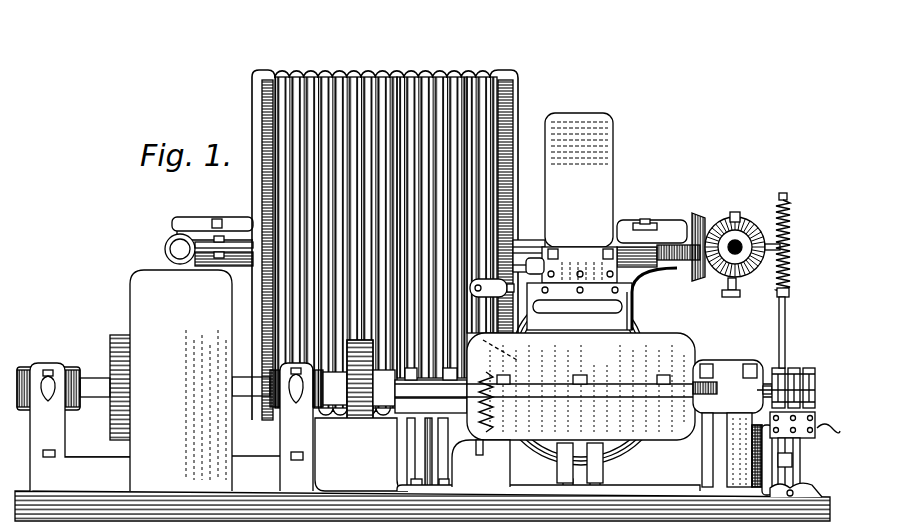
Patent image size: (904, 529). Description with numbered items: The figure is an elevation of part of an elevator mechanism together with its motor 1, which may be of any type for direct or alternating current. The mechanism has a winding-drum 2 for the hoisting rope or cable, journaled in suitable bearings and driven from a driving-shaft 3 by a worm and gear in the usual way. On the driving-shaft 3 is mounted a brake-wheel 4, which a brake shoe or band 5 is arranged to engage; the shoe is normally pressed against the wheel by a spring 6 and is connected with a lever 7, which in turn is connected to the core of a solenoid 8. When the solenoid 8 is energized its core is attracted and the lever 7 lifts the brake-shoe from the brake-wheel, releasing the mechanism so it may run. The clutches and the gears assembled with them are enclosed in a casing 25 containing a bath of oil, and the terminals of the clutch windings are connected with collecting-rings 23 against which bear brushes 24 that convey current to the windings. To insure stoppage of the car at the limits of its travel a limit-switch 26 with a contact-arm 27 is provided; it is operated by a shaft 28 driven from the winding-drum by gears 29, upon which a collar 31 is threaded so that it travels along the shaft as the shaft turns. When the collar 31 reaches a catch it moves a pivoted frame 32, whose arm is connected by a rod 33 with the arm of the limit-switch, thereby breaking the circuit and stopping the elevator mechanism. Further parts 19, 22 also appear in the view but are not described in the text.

The motor 1 is at (147, 276).
The winding-drum 2 is at (393, 78).
The driving-shaft 3 is at (422, 492).
The brake-wheel 4 is at (575, 326).
The brake shoe or band 5 is at (547, 458).
The spring 6 is at (468, 422).
The lever 7 is at (477, 307).
The solenoid 8 is at (610, 284).
The shaft 19 is at (175, 432).
The bearing pedestal 22 is at (152, 446).
The collecting-rings 23 is at (778, 368).
The brushes 24 is at (816, 398).
The casing 25 is at (583, 410).
The limit-switch 26 is at (773, 475).
The contact-arm 27 is at (799, 466).
The shaft 28 is at (733, 240).
The gears 29 is at (706, 214).
The collar 31 is at (737, 283).
The pivoted frame 32 is at (730, 294).
The rod 33 is at (788, 227).